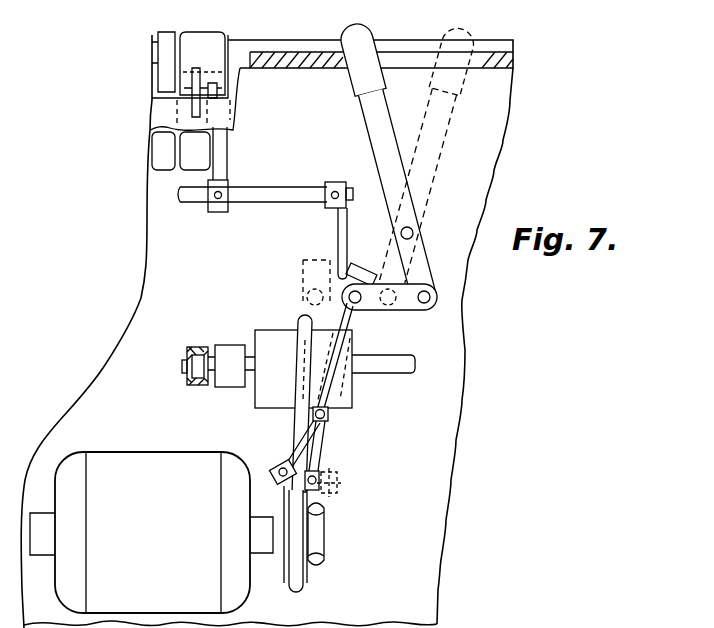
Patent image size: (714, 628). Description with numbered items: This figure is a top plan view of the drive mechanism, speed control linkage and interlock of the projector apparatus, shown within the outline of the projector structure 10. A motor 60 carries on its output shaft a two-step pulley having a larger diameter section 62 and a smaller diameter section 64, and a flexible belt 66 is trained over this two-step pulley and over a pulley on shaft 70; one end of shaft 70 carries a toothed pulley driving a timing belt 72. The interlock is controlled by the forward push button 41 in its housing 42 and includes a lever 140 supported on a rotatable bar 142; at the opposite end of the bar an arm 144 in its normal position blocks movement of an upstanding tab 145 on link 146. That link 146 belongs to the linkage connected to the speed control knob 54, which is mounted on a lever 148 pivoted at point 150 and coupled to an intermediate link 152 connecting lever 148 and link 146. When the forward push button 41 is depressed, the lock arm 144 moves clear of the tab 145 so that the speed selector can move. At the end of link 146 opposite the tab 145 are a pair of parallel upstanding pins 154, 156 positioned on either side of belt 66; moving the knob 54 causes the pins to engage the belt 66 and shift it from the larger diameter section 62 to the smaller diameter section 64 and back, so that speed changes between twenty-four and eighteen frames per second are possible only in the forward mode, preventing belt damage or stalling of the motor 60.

The machine frame / table 10 is at (516, 66).
The forward push button 41 is at (218, 22).
The switch housing 42 is at (158, 33).
The speed control knob 54 is at (370, 30).
The motor 60 is at (142, 462).
The larger diameter section of the two-step pulley 62 is at (286, 583).
The smaller diameter section of the two-step pulley 64 is at (326, 556).
The flexible belt 66 is at (298, 350).
The shaft 70 is at (400, 374).
The timing belt 72 is at (196, 346).
The lever 140 is at (214, 158).
The rotatable bar 142 is at (284, 188).
The arm 144 is at (338, 240).
The tab 145 is at (357, 266).
The link 146 is at (357, 317).
The lever 148 is at (392, 132).
The pivot point 150 is at (414, 237).
The intermediate link 152 is at (410, 304).
The upstanding pin 154 is at (283, 460).
The upstanding pin 156 is at (322, 478).